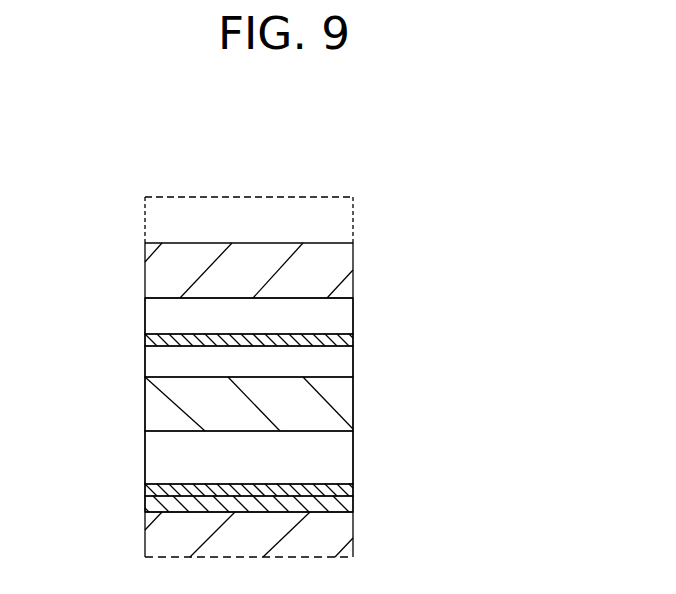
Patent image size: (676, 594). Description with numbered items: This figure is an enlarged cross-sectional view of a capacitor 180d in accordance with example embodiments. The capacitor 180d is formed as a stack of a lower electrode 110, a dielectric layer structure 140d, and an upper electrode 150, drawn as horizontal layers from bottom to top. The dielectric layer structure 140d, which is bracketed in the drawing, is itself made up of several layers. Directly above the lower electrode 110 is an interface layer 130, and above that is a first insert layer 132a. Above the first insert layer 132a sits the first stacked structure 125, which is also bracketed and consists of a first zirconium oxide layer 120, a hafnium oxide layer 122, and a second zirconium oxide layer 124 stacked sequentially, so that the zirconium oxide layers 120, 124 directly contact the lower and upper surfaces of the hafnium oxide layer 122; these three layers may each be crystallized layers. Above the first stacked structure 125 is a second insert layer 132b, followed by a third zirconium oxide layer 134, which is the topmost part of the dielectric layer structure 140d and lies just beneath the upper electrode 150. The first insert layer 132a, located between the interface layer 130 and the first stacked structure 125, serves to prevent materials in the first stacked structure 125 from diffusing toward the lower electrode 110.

The capacitor 180d is at (117, 191).
The upper electrode 150 is at (342, 268).
The third zirconium oxide layer 134 is at (342, 312).
The second insert layer 132b is at (342, 337).
The second zirconium oxide layer 124 is at (342, 360).
The hafnium oxide layer 122 is at (342, 400).
The first zirconium oxide layer 120 is at (342, 452).
The first stacked structure 125 is at (443, 355).
The first insert layer 132a is at (342, 488).
The interface layer 130 is at (342, 504).
The lower electrode 110 is at (342, 537).
The dielectric layer structure 140d is at (496, 515).